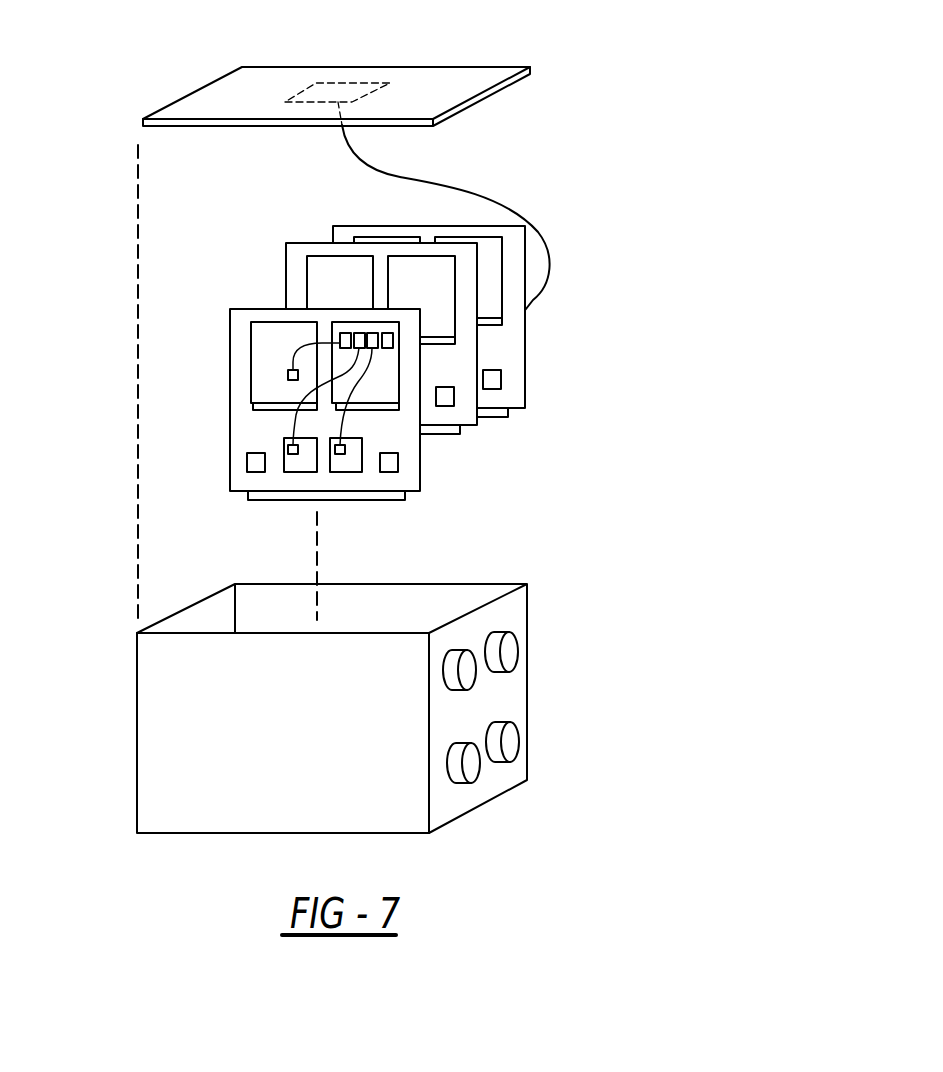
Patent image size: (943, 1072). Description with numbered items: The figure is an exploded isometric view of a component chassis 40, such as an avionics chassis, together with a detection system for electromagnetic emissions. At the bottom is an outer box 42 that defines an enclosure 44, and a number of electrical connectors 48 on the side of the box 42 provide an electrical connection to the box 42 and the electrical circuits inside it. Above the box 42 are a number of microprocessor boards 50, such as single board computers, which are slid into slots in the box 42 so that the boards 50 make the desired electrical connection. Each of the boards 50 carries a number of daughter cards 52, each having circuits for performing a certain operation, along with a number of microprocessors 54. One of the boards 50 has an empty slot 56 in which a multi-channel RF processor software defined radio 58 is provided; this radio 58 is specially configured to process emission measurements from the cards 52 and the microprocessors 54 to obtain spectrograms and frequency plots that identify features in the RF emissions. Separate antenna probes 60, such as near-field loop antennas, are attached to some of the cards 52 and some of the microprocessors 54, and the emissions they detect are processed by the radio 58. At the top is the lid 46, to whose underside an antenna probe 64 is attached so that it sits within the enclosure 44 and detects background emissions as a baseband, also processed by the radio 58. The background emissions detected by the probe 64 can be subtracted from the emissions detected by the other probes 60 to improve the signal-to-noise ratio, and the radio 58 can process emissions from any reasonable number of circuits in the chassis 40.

The component chassis 40 is at (76, 240).
The outer box 42 is at (182, 737).
The enclosure 44 is at (337, 674).
The lid 46 is at (447, 85).
The electrical connectors 48 is at (510, 653).
The microprocessor boards 50 is at (383, 360).
The daughter cards 52 is at (262, 333).
The microprocessors 54 is at (352, 460).
The empty slot 56 is at (396, 386).
The multi-channel RF processor software defined radio 58 is at (383, 408).
The antenna probe 60 is at (288, 375).
The antenna probe 64 is at (323, 88).